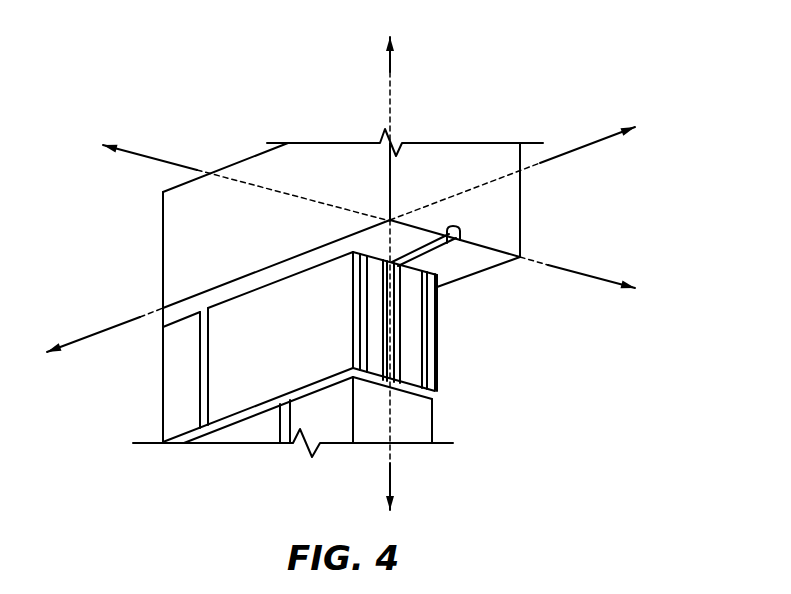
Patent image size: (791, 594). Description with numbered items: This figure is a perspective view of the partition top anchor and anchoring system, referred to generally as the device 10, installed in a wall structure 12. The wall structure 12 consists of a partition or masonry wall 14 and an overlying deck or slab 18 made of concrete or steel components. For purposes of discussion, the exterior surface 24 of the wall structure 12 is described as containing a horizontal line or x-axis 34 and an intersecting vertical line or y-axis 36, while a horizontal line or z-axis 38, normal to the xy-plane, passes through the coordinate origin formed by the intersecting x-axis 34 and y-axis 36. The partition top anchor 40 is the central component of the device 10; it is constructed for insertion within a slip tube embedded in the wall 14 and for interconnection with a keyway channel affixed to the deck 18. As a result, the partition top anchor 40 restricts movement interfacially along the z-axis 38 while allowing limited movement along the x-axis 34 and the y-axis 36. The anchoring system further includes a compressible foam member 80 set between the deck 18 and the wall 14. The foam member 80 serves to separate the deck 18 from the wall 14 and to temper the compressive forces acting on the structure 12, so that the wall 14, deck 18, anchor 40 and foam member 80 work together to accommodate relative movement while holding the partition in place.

The partition top anchor and anchoring system 10 is at (574, 76).
The wall structure 12 is at (430, 367).
The masonry wall 14 is at (163, 378).
The deck 18 is at (462, 160).
The exterior surface 24 is at (200, 430).
The x-axis 34 is at (148, 156).
The y-axis 36 is at (390, 72).
The z-axis 38 is at (93, 337).
The partition top anchor 40 is at (398, 322).
The compressible foam member 80 is at (437, 277).